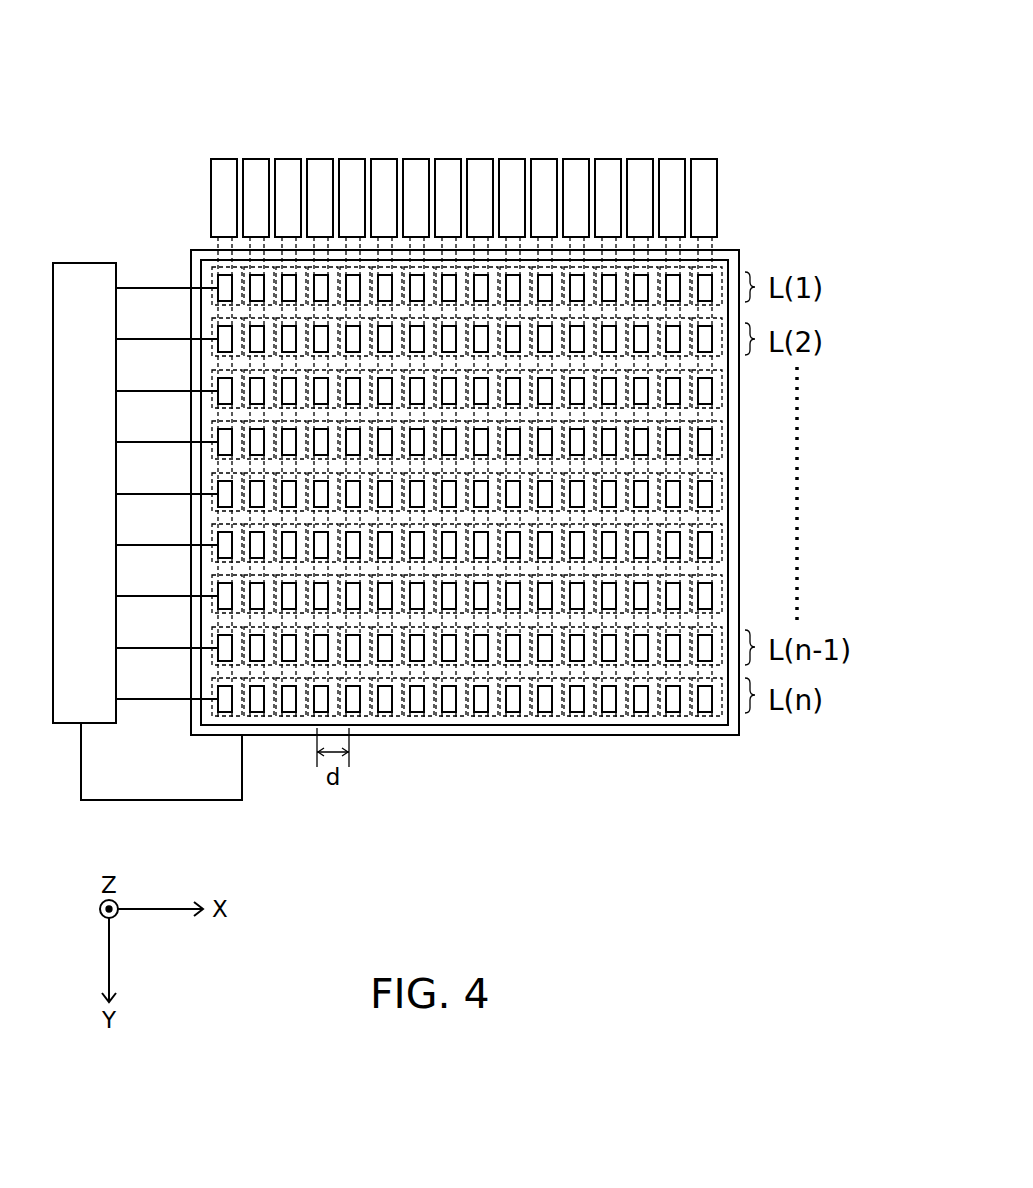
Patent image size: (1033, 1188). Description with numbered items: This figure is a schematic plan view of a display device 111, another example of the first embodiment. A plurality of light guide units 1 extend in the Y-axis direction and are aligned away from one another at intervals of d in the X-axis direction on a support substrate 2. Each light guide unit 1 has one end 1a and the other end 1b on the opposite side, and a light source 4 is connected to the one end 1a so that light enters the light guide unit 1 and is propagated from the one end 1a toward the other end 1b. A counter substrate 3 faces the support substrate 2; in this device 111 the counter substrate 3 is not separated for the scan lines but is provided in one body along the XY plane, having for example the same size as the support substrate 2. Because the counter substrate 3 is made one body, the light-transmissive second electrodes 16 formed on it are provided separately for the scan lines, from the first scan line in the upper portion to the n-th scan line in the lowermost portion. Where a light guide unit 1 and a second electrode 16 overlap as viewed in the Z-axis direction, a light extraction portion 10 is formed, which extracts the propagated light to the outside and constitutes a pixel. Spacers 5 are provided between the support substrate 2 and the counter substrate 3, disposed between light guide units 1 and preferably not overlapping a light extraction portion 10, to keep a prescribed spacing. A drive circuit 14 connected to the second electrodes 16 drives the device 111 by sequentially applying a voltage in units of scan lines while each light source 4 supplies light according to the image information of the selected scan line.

The display device 111 is at (655, 100).
The light source 4 is at (220, 168).
The one end 1a is at (223, 236).
The drive circuit 14 is at (78, 280).
The support substrate 2 is at (191, 268).
The counter substrate 3 is at (202, 265).
The second electrode 16 is at (728, 283).
The light extraction portion 10 is at (705, 442).
The light guide unit 1 is at (613, 733).
The other end 1b is at (226, 728).
The spacer 5 is at (465, 733).